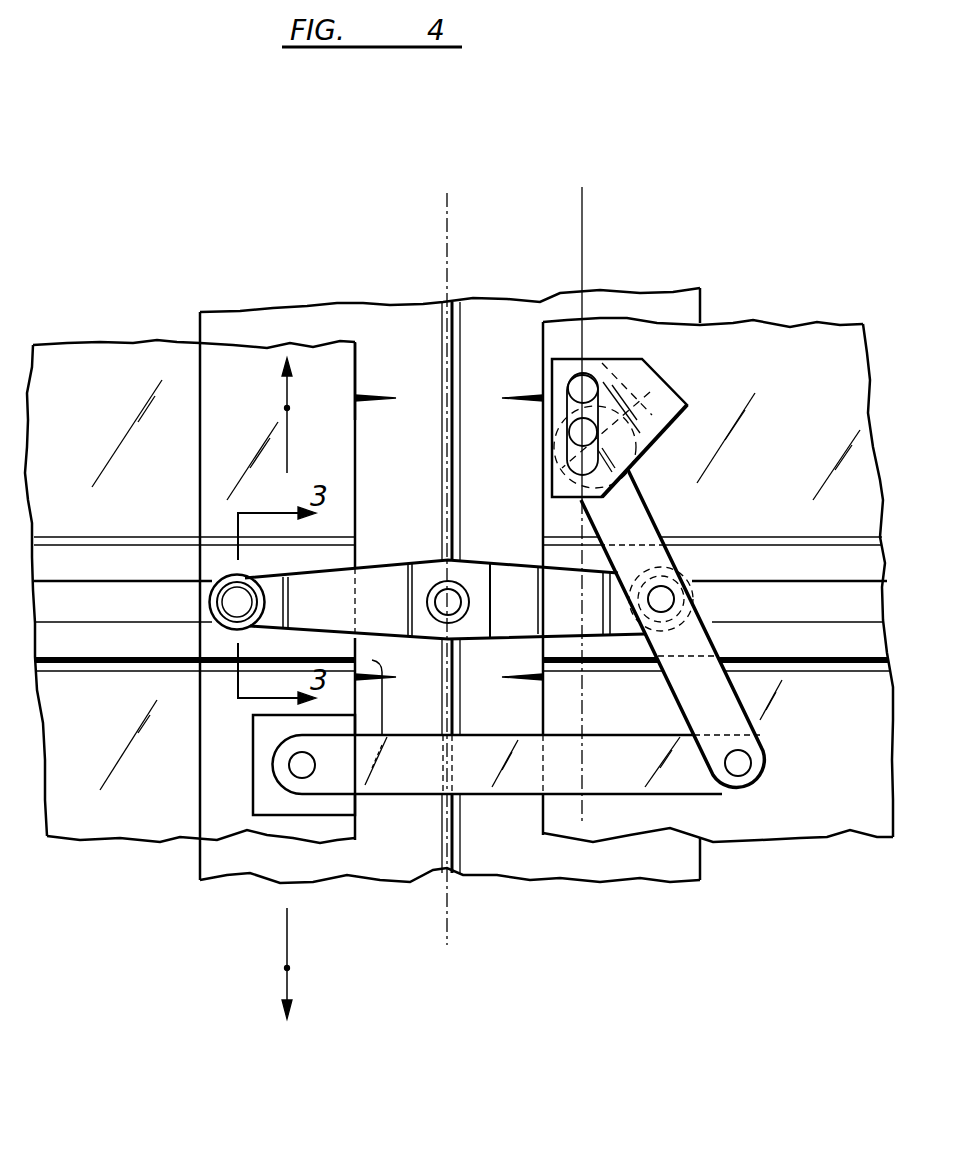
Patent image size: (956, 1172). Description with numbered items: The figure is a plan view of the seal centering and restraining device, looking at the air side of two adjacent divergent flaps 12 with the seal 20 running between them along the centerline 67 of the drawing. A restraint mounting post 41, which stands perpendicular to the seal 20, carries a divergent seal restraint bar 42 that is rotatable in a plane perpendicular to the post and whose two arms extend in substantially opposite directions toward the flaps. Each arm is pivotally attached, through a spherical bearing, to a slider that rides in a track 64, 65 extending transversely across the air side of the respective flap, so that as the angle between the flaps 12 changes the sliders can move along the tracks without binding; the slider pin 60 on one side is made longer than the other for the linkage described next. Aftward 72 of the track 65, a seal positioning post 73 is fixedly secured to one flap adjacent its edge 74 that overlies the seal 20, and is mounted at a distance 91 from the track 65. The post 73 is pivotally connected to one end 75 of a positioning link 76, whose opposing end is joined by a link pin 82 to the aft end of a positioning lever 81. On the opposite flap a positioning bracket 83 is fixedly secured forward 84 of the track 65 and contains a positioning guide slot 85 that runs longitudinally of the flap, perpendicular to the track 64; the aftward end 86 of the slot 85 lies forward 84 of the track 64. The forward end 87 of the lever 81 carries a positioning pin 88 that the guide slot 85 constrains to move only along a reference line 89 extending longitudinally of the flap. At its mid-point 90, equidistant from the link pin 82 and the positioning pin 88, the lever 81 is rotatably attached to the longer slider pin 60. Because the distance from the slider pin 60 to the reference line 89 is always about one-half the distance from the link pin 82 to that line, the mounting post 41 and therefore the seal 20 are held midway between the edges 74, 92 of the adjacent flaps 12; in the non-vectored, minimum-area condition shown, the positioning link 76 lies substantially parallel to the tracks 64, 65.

The divergent flaps 12 is at (102, 724).
The seal 20 is at (416, 849).
The restraint mounting post 41 is at (454, 598).
The divergent seal restraint bar 42 is at (380, 592).
The slider pin 60 is at (693, 580).
The track 64 is at (813, 598).
The track 65 is at (107, 598).
The center axis 67 is at (448, 284).
The aftward direction 72 is at (285, 968).
The seal positioning post 73 is at (290, 767).
The edge 74 is at (357, 365).
The one end of positioning link 75 is at (278, 750).
The positioning link 76 is at (520, 780).
The positioning lever 81 is at (640, 530).
The link pin 82 is at (745, 770).
The positioning bracket 83 is at (650, 392).
The forward direction 84 is at (284, 409).
The positioning guide slot 85 is at (587, 386).
The aftward end of guide slot 86 is at (625, 473).
The forward end of positioning lever 87 is at (577, 398).
The positioning pin 88 is at (583, 432).
The reference line 89 is at (584, 230).
The mid-point of lever 90 is at (670, 598).
The distance 91 is at (404, 735).
The edge 92 is at (546, 487).